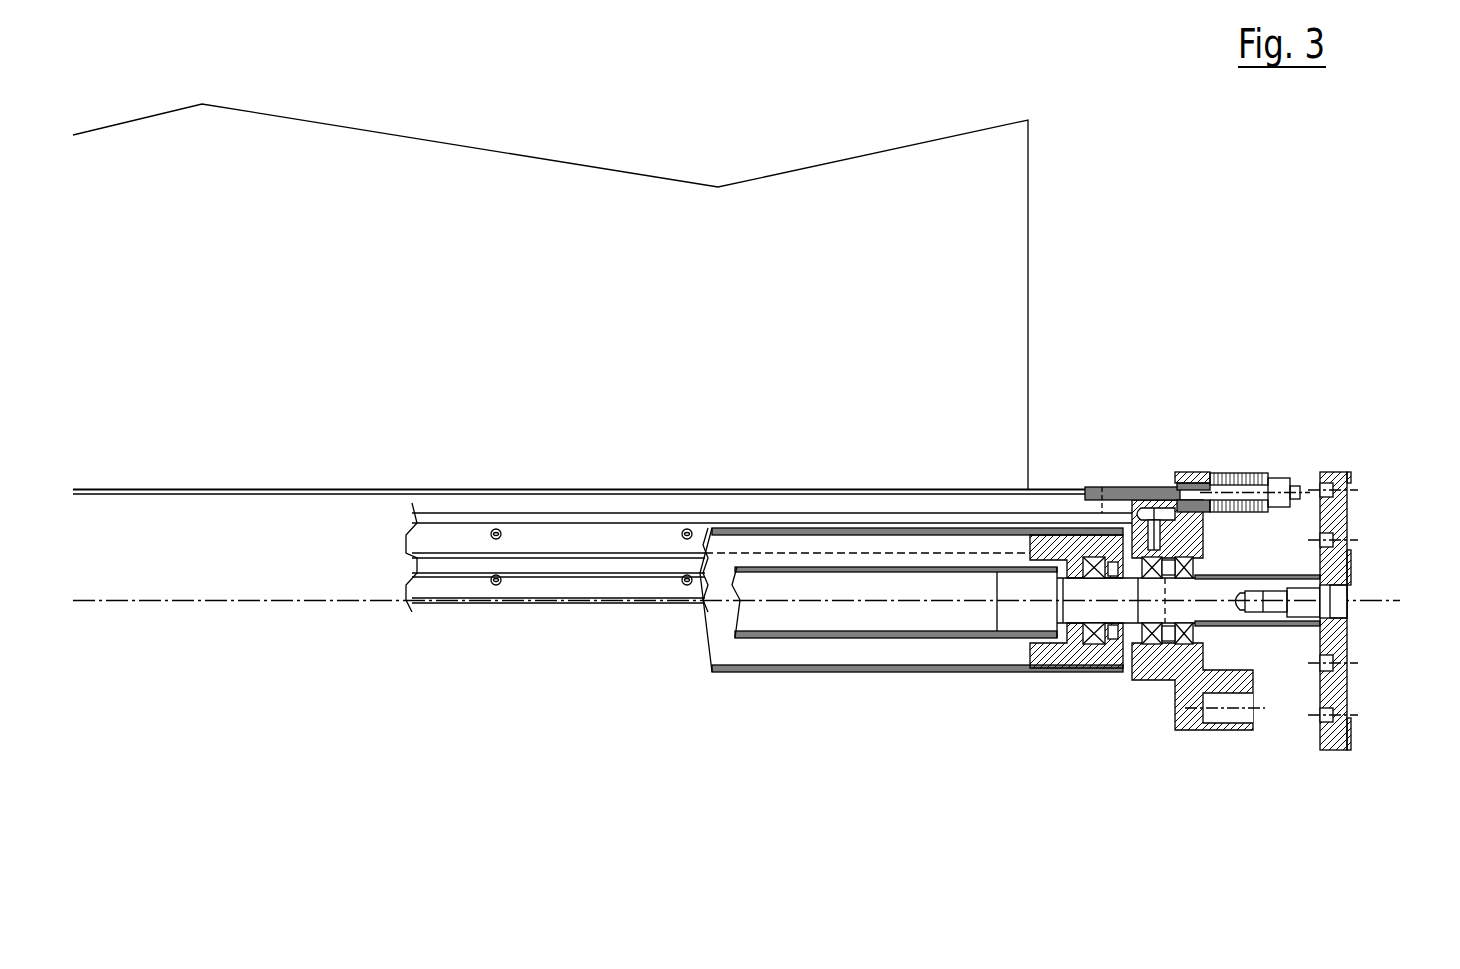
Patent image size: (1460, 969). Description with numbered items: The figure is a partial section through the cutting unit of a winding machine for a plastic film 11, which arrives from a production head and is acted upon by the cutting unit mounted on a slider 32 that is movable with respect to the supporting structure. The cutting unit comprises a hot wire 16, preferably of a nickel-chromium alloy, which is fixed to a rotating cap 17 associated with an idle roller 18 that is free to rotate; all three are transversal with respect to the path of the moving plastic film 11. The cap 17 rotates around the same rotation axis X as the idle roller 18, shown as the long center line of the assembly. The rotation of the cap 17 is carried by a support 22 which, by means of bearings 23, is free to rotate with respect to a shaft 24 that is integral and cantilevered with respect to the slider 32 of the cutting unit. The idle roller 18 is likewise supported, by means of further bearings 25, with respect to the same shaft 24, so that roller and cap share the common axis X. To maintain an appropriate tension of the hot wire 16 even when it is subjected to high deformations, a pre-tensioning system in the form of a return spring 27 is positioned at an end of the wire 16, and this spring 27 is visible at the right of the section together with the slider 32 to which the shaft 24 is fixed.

The plastic film 11 is at (331, 233).
The rotation axis X is at (255, 603).
The hot wire 16 is at (1062, 487).
The rotating cap 17 is at (541, 590).
The idle roller 18 is at (832, 670).
The support 22 is at (1143, 670).
The bearings 23 is at (1160, 553).
The shaft 24 is at (1268, 627).
The bearings 25 is at (1090, 647).
The return spring 27 is at (1250, 472).
The slider 32 is at (1348, 545).